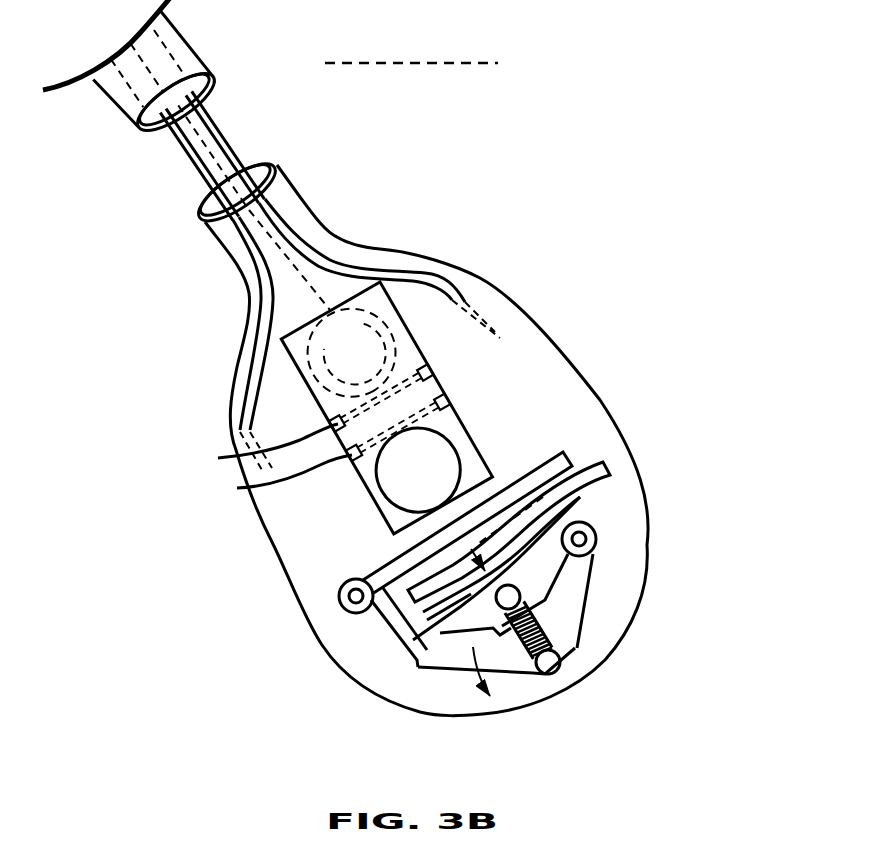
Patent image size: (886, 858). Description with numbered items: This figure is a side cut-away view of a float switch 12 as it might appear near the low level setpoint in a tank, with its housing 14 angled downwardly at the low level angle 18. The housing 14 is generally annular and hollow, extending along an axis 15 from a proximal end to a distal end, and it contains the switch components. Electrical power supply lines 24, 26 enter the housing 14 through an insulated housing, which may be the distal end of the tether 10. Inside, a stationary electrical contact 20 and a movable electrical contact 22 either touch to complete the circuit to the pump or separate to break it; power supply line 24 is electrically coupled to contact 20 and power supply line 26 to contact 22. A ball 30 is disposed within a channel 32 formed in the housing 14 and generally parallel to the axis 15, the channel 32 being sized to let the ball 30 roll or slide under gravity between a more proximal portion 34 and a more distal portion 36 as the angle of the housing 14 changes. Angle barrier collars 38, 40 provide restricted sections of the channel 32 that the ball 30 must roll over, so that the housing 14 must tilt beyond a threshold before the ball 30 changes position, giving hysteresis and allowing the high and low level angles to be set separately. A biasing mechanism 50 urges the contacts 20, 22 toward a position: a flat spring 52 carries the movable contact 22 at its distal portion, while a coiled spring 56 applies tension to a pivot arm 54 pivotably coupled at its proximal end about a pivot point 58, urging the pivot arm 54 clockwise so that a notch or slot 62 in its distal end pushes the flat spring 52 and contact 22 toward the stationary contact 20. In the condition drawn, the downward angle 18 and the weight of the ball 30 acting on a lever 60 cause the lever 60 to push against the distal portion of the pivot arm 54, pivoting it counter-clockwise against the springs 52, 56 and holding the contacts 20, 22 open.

The tether 10 is at (106, 94).
The float switch 12 is at (604, 190).
The housing 14 is at (232, 364).
The axis 15 is at (266, 232).
The low level angle 18 is at (326, 212).
The stationary electrical contact 20 is at (435, 622).
The movable electrical contact 22 is at (417, 644).
The electrical power supply line 24 is at (186, 156).
The electrical power supply line 26 is at (230, 158).
The ball 30 is at (456, 516).
The channel 32 is at (432, 378).
The proximal portion of the channel 34 is at (400, 290).
The distal portion of the channel 36 is at (484, 453).
The angle barrier collar 38 is at (308, 417).
The angle barrier collar 40 is at (326, 448).
The biasing mechanism 50 is at (714, 477).
The flat spring 52 is at (594, 462).
The pivot arm 54 is at (580, 580).
The coiled spring 56 is at (560, 642).
The pivot point 58 is at (596, 540).
The lever 60 is at (372, 578).
The notch or slot 62 is at (428, 640).